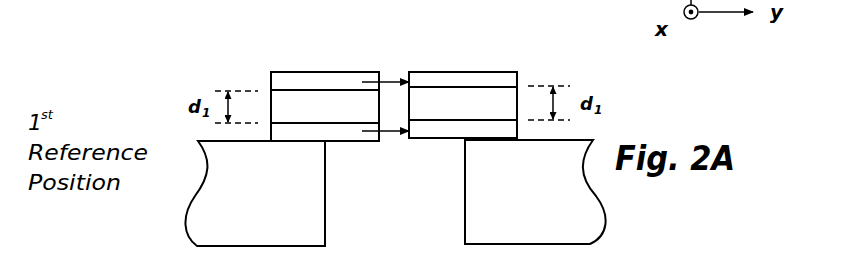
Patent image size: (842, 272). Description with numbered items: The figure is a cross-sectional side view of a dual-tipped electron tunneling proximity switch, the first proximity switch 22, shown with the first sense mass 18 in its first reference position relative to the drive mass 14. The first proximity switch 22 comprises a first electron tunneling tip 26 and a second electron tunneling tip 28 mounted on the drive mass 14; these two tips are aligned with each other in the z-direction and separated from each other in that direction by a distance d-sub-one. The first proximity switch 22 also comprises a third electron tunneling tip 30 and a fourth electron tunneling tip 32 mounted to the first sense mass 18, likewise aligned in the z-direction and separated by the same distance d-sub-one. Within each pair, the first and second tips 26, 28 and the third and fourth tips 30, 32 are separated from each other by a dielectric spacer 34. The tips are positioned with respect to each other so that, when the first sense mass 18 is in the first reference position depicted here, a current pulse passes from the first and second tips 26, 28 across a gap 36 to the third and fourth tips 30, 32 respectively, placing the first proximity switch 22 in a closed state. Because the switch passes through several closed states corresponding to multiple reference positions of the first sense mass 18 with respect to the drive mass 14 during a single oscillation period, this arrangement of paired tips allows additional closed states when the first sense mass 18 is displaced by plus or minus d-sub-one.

The first proximity switch 22 is at (143, 62).
The drive mass 14 is at (270, 204).
The first sense mass 18 is at (542, 203).
The second electron tunneling tip 28 is at (302, 72).
The fourth electron tunneling tip 32 is at (447, 72).
The dielectric spacer 34 is at (335, 118).
The gap 36 is at (408, 66).
The first electron tunneling tip 26 is at (343, 141).
The third electron tunneling tip 30 is at (454, 140).